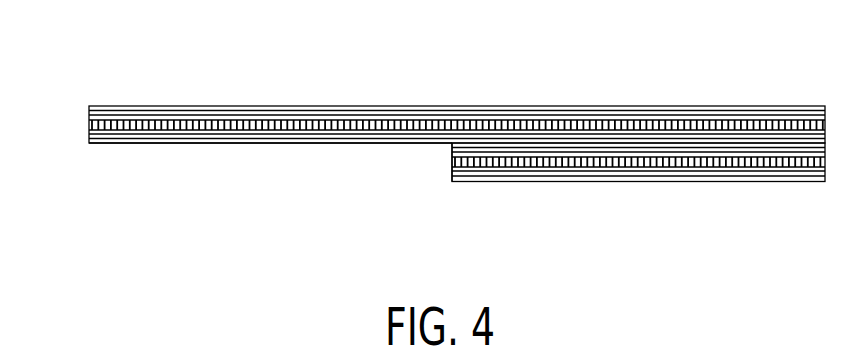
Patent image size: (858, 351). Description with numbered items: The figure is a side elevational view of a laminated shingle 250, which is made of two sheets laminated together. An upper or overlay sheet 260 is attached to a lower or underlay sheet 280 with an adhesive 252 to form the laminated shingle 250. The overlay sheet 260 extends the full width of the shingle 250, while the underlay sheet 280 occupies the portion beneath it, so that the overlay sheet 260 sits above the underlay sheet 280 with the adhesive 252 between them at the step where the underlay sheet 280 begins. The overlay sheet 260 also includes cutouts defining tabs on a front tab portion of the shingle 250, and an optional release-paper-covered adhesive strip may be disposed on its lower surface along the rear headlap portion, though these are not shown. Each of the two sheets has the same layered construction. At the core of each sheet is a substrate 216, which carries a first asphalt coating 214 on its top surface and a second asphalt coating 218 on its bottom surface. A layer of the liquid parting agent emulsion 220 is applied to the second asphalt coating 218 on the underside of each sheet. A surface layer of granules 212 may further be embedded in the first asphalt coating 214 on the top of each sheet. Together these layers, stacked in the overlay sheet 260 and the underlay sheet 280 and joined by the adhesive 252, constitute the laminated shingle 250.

The shingle 250 is at (190, 88).
The overlay sheet 260 is at (247, 165).
The underlay sheet 280 is at (619, 202).
The adhesive 252 is at (451, 146).
The surface layer of granules 212 is at (351, 116).
The first asphalt coating 214 is at (301, 113).
The substrate 216 is at (399, 125).
The second asphalt coating 218 is at (303, 138).
The layer of liquid parting agent emulsion 220 is at (351, 140).